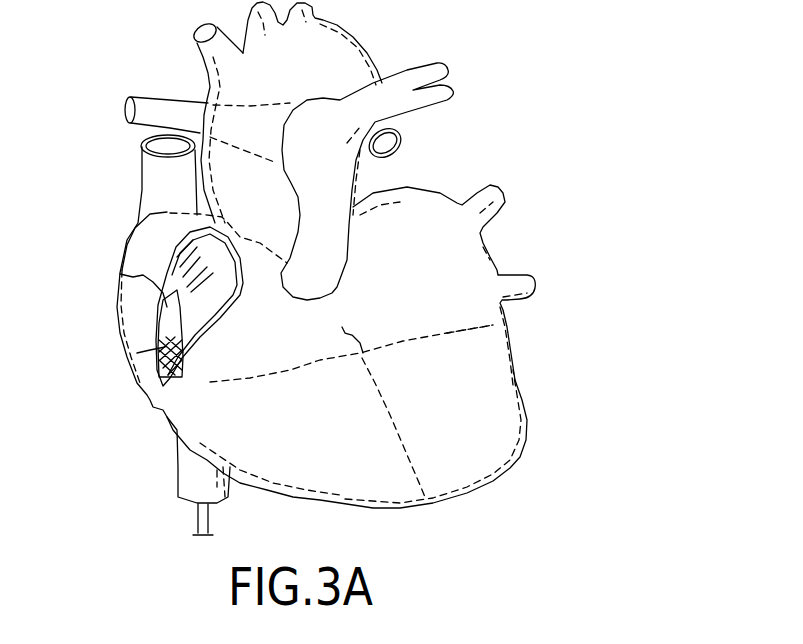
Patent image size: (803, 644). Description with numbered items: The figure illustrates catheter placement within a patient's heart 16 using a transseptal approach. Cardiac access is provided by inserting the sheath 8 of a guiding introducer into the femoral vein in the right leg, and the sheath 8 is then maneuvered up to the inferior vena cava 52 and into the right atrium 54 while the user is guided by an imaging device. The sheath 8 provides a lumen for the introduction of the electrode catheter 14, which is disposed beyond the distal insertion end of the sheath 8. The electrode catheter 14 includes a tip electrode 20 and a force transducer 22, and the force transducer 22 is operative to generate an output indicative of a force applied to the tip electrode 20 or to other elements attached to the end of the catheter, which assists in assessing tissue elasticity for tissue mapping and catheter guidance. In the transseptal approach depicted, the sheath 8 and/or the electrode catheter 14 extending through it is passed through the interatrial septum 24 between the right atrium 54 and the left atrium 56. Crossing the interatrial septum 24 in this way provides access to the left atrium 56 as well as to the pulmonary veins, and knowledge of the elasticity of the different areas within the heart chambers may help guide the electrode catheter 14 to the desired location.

The sheath 8 is at (193, 522).
The electrode catheter 14 is at (183, 333).
The heart 16 is at (527, 381).
The tip electrode 20 is at (177, 303).
The force transducer 22 is at (183, 335).
The interatrial septum 24 is at (342, 327).
The inferior vena cava 52 is at (190, 465).
The right atrium 54 is at (217, 307).
The left atrium 56 is at (458, 305).